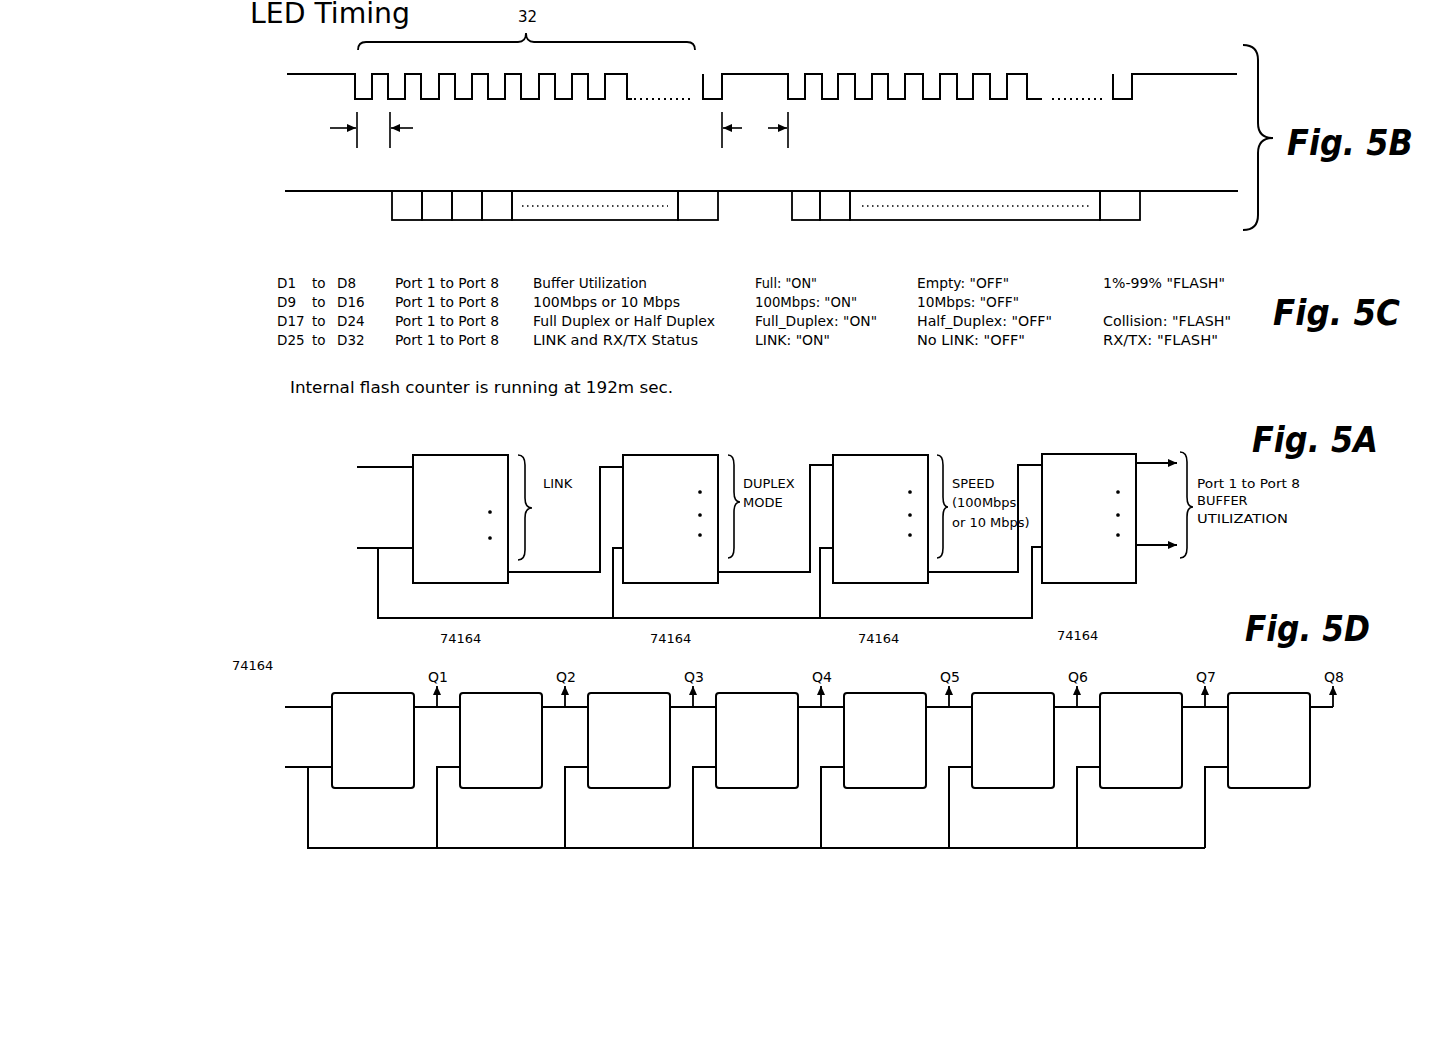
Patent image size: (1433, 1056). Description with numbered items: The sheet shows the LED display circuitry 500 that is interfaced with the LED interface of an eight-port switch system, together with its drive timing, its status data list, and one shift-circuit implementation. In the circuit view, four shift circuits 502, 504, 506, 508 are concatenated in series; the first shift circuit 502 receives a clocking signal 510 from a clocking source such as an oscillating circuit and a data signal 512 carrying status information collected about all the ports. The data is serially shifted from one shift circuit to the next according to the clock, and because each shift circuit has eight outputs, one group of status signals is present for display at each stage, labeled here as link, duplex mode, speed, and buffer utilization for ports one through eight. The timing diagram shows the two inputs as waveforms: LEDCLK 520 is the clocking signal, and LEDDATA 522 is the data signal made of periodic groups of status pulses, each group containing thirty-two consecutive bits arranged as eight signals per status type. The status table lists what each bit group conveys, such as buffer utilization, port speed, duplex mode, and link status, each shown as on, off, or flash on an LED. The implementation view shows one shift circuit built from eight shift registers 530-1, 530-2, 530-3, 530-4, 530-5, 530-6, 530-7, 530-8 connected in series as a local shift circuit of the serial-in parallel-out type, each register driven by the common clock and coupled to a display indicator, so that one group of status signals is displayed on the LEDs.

In FIG. 5A, the circuitry 500 is at (1124, 609).
In FIG. 5A, the shift circuit 502 is at (450, 468).
In FIG. 5A, the shift circuit 504 is at (660, 468).
In FIG. 5A, the shift circuit 506 is at (865, 468).
In FIG. 5A, the shift circuit 508 is at (1077, 467).
In FIG. 5A, the clocking signal 510 is at (659, 571).
In FIG. 5D, the clocking signal 510 is at (736, 800).
In FIG. 5A, the data signal 512 is at (345, 461).
In FIG. 5D, the data signal 512 is at (287, 706).
In FIG. 5B, the LEDCLK 520 is at (762, 100).
In FIG. 5B, the LEDDATA 522 is at (761, 194).
In FIG. 5D, the shift register 530-1 is at (396, 737).
In FIG. 5D, the shift register 530-2 is at (524, 737).
In FIG. 5D, the shift register 530-3 is at (652, 737).
In FIG. 5D, the shift register 530-4 is at (780, 737).
In FIG. 5D, the shift register 530-5 is at (908, 737).
In FIG. 5D, the shift register 530-6 is at (1036, 737).
In FIG. 5D, the shift register 530-7 is at (1164, 737).
In FIG. 5D, the shift register 530-8 is at (1280, 737).